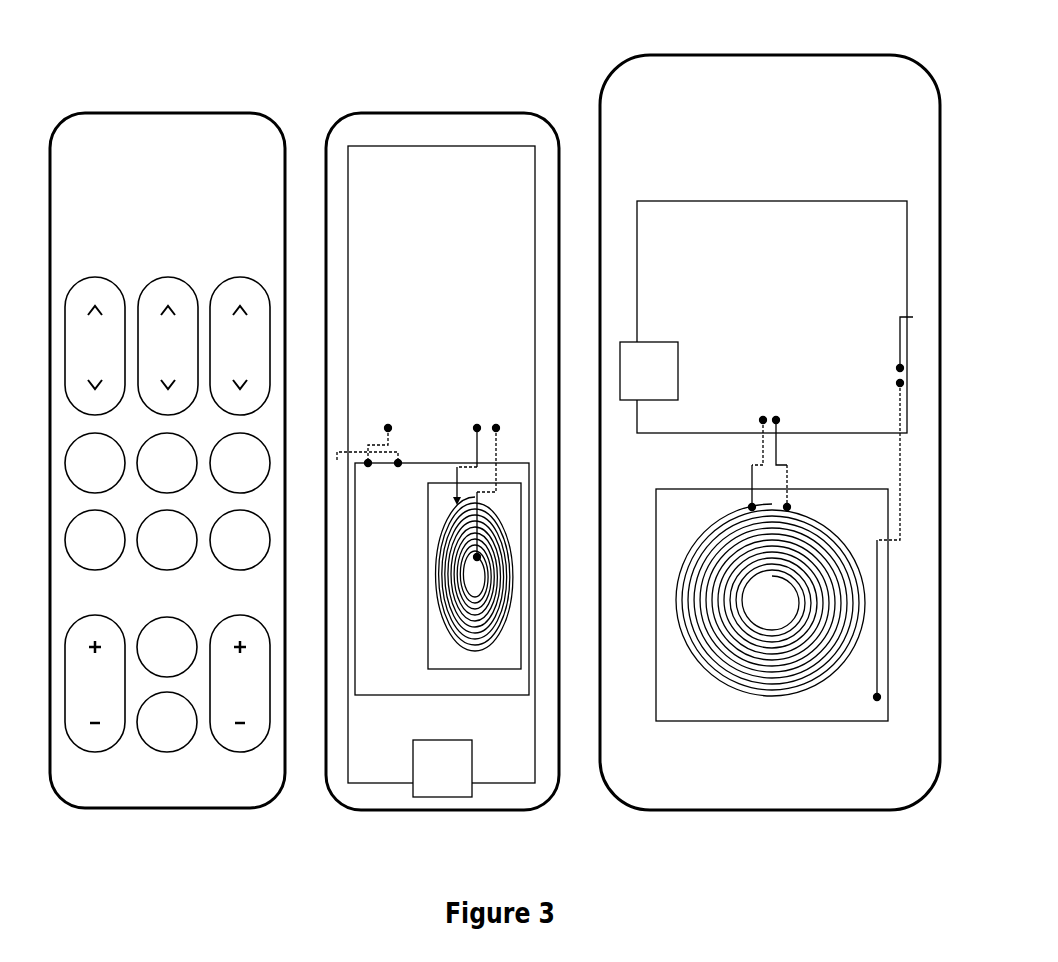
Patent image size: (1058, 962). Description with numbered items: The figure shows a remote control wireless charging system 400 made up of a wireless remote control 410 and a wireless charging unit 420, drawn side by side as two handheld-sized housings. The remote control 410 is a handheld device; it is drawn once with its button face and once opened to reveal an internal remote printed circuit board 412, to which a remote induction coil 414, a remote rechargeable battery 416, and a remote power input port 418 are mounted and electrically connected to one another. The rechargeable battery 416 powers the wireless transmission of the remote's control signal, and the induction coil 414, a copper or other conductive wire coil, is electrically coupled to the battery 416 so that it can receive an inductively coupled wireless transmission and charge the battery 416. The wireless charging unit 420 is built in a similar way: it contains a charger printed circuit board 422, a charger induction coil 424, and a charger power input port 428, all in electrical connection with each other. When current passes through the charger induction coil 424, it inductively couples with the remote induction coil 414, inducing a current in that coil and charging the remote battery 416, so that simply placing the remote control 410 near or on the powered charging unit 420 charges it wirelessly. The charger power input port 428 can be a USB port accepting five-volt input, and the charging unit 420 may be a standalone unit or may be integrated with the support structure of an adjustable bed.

The remote control wireless charging system 400 is at (552, 72).
The wireless remote control 410 is at (140, 140).
The remote printed circuit board 412 is at (441, 464).
The remote induction coil 414 is at (490, 645).
The remote rechargeable battery 416 is at (390, 652).
The remote power input port 418 is at (433, 767).
The wireless charging unit 420 is at (657, 78).
The charger printed circuit board 422 is at (727, 225).
The charger induction coil 424 is at (808, 692).
The charger power input port 428 is at (655, 358).